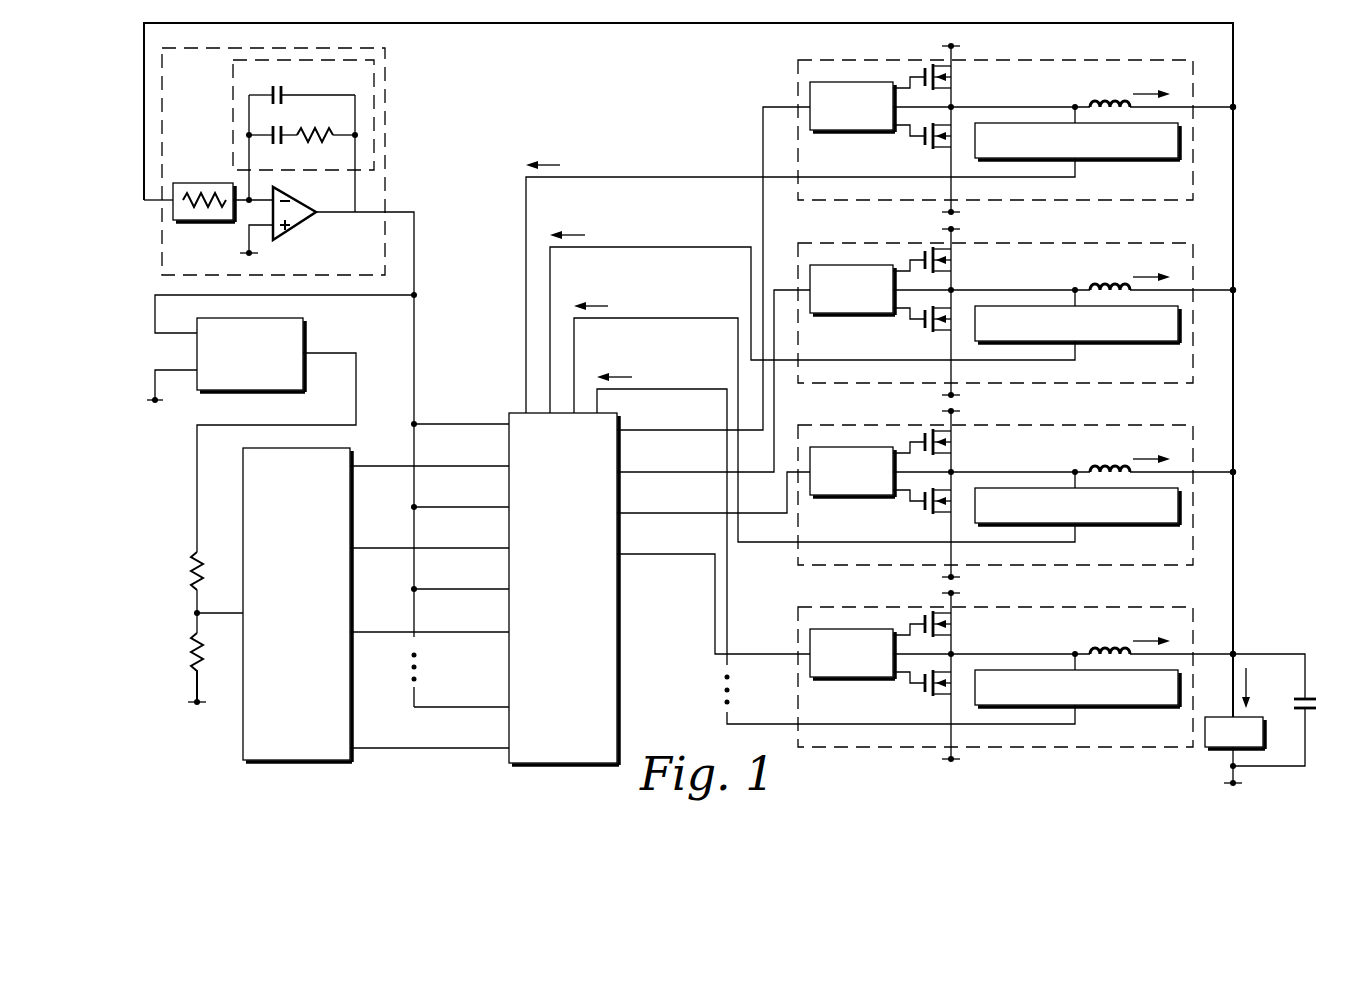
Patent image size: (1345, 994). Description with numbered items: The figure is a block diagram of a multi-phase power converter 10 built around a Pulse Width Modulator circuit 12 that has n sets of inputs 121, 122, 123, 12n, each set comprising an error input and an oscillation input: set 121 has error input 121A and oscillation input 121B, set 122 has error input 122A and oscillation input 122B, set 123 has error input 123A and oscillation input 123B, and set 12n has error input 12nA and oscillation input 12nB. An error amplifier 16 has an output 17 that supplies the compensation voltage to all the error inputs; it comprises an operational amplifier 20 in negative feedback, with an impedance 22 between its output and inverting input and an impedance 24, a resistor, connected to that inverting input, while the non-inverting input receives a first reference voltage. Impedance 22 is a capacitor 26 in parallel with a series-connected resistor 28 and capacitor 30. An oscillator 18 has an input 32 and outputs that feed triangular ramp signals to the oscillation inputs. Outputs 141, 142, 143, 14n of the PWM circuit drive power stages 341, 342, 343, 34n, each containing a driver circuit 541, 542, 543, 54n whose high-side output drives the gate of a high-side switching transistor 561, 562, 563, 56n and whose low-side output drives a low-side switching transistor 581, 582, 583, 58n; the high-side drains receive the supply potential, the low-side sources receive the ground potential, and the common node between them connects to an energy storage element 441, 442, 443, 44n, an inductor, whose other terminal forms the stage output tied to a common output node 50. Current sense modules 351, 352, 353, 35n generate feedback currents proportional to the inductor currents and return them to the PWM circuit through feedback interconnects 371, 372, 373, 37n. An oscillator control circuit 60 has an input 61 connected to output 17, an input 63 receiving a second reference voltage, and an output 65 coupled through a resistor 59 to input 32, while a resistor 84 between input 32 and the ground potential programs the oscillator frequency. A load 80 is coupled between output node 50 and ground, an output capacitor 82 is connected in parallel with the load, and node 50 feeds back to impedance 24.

The multi-phase power converter 10 is at (811, 788).
The PWM circuit 12 is at (620, 636).
The first set of inputs 121 is at (404, 444).
The second set of inputs 122 is at (404, 527).
The third set of inputs 123 is at (404, 609).
The nth set of inputs 12n is at (402, 716).
The error input 121A is at (484, 424).
The oscillation input 121B is at (484, 466).
The error input 122A is at (484, 507).
The oscillation input 122B is at (484, 548).
The error input 123A is at (484, 590).
The oscillation input 123B is at (484, 632).
The error input 12nA is at (484, 706).
The oscillation input 12nB is at (484, 748).
The output 141 is at (638, 431).
The output 142 is at (638, 473).
The output 143 is at (638, 514).
The output 14n is at (638, 555).
The error amplifier 16 is at (385, 105).
The output 17 is at (414, 212).
The oscillator 18 is at (243, 512).
The operational amplifier 20 is at (305, 226).
The impedance 22 is at (233, 110).
The impedance 24 is at (202, 222).
The capacitor 26 is at (279, 87).
The resistor 28 is at (324, 141).
The capacitor 30 is at (281, 128).
The input 32 is at (215, 610).
The power stage 341 is at (1118, 60).
The power stage 342 is at (1118, 243).
The power stage 343 is at (1118, 425).
The power stage 34n is at (1118, 607).
The current sense module 351 is at (1113, 160).
The current sense module 352 is at (1113, 343).
The current sense module 353 is at (1113, 525).
The current sense module 35n is at (1113, 707).
The feedback interconnect 371 is at (570, 177).
The feedback interconnect 372 is at (594, 247).
The feedback interconnect 373 is at (617, 318).
The feedback interconnect 37n is at (640, 389).
The energy storage element 441 is at (1092, 97).
The energy storage element 442 is at (1092, 280).
The energy storage element 443 is at (1092, 462).
The energy storage element 44n is at (1092, 644).
The output node 50 is at (1235, 472).
The driver circuit 541 is at (862, 133).
The driver circuit 542 is at (862, 316).
The driver circuit 543 is at (862, 498).
The driver circuit 54n is at (862, 680).
The high-side switching transistor 561 is at (948, 70).
The high-side switching transistor 562 is at (948, 253).
The high-side switching transistor 563 is at (948, 435).
The high-side switching transistor 56n is at (948, 617).
The low-side switching transistor 581 is at (924, 148).
The low-side switching transistor 582 is at (924, 331).
The low-side switching transistor 583 is at (924, 513).
The low-side switching transistor 58n is at (924, 695).
The resistor 59 is at (195, 560).
The oscillator control circuit 60 is at (255, 393).
The input 61 is at (170, 333).
The input 63 is at (160, 369).
The output 65 is at (321, 353).
The load 80 is at (1220, 717).
The output capacitor 82 is at (1308, 698).
The resistor 84 is at (203, 657).